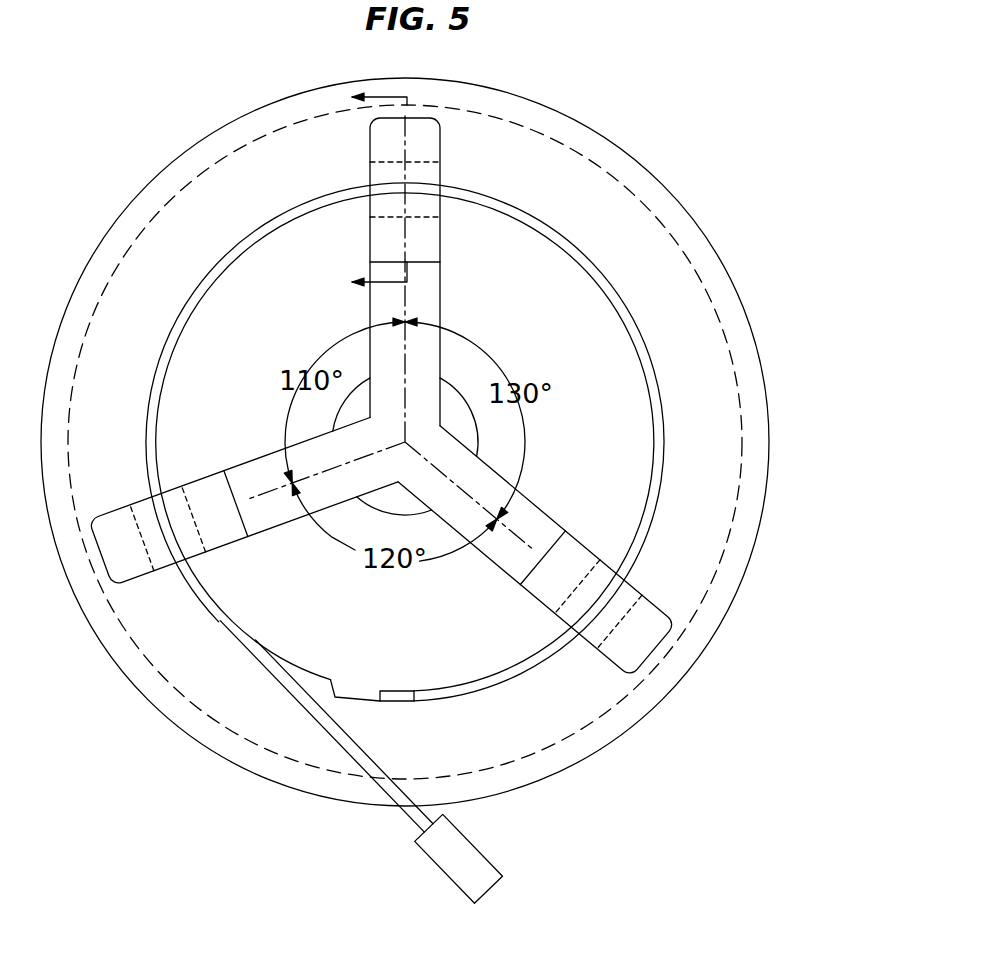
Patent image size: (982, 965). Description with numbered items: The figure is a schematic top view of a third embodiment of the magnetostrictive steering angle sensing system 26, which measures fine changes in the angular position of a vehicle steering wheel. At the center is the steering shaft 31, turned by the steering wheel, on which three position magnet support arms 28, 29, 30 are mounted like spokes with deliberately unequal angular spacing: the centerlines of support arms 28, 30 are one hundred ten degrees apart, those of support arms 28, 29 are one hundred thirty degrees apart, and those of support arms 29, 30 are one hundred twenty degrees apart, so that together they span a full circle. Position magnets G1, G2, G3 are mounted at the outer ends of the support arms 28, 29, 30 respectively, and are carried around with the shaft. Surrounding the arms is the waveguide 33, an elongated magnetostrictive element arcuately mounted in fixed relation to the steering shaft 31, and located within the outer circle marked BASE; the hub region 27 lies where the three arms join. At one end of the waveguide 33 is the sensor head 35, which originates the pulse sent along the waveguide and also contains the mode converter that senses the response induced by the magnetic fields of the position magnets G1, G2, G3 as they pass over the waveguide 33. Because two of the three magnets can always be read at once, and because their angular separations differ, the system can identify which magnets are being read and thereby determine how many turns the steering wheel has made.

The steering angle sensing system 26 is at (643, 747).
The hub of grip member 27 is at (392, 462).
The position magnet support arm 28 is at (440, 268).
The position magnet support arm 29 is at (527, 583).
The position magnet support arm 30 is at (233, 468).
The steering shaft 31 is at (450, 413).
The waveguide 33 is at (186, 303).
The sensor head 35 is at (450, 862).
The position magnet G1 is at (455, 165).
The position magnet G2 is at (608, 553).
The position magnet G3 is at (135, 494).
The base BASE is at (635, 177).